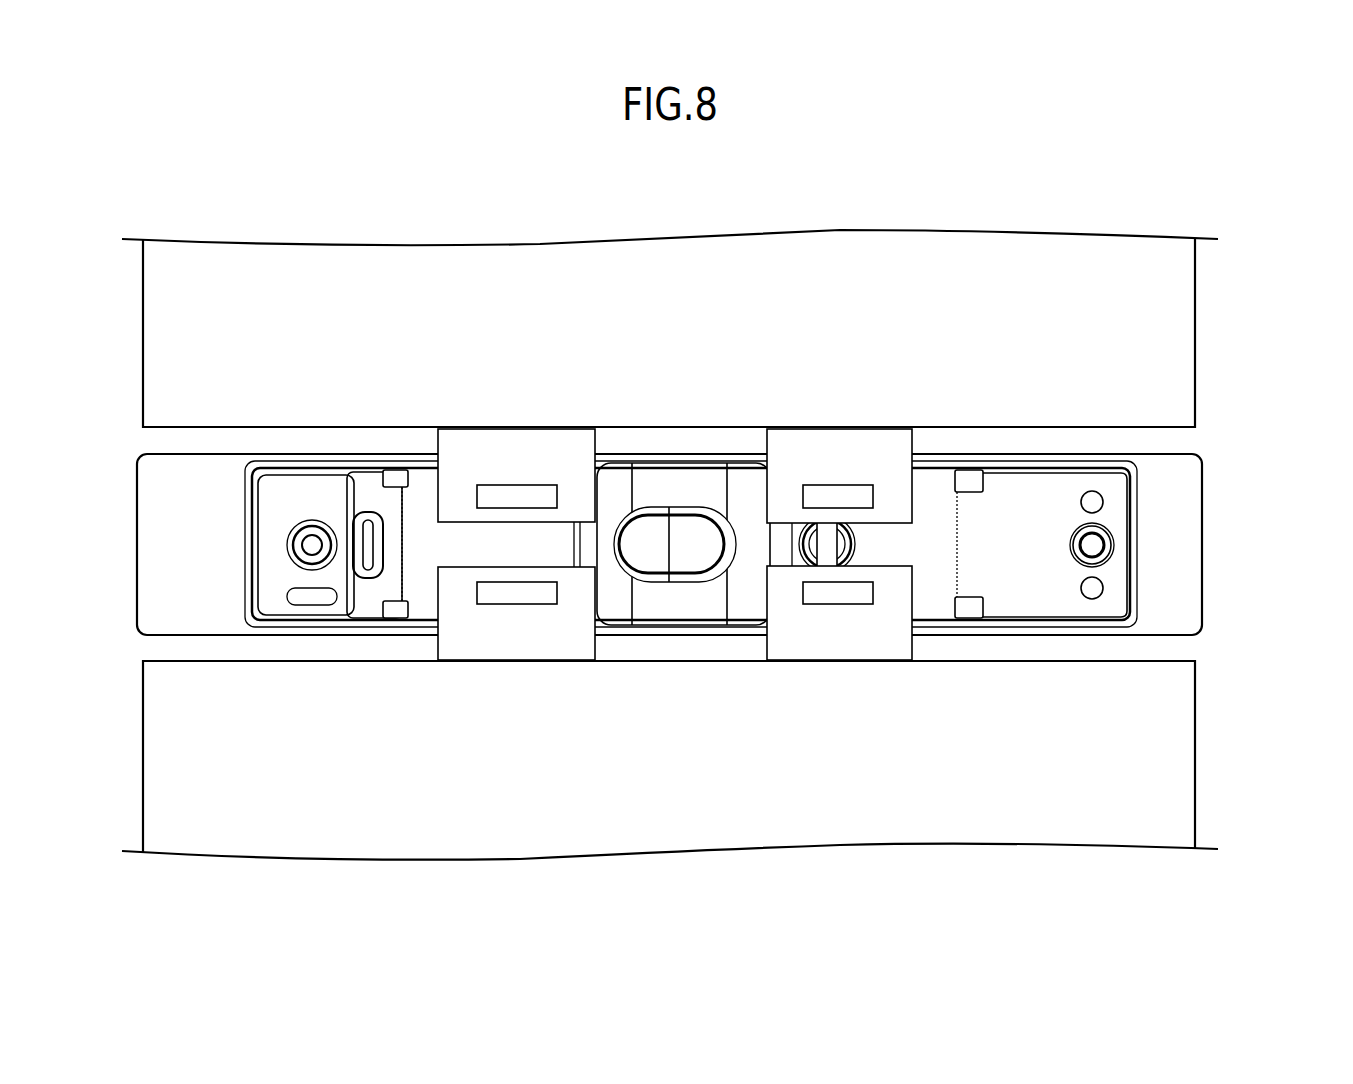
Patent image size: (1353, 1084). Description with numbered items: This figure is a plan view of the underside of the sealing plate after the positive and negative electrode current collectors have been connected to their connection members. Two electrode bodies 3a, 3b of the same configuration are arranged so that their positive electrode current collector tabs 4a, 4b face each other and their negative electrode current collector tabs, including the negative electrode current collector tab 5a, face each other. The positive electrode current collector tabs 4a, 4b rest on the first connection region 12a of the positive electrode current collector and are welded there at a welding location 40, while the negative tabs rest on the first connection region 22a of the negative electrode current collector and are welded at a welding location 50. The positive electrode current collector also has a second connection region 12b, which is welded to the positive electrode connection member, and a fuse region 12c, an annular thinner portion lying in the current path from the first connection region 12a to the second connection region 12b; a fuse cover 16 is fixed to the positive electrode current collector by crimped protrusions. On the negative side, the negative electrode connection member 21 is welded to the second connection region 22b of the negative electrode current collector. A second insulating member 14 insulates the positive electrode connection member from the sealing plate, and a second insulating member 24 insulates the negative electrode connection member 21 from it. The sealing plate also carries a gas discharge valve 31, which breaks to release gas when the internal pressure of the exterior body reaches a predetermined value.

The electrode body 3a is at (839, 268).
The electrode body 3b is at (840, 823).
The positive electrode current collector tab 4a is at (890, 470).
The positive electrode current collector tab 4b is at (888, 625).
The negative electrode current collector tab 5a is at (552, 480).
The first connection region 12a is at (932, 516).
The second connection region 12b is at (1095, 490).
The fuse region 12c is at (1103, 545).
The second insulating member 14 is at (750, 478).
The fuse cover 16 is at (1132, 470).
The negative electrode connection member 21 is at (290, 490).
The first connection region 22a is at (425, 512).
The second connection region 22b is at (367, 497).
The second insulating member 24 is at (608, 478).
The gas discharge valve 31 is at (693, 548).
The welding location 40 is at (818, 500).
The welding location 50 is at (490, 500).